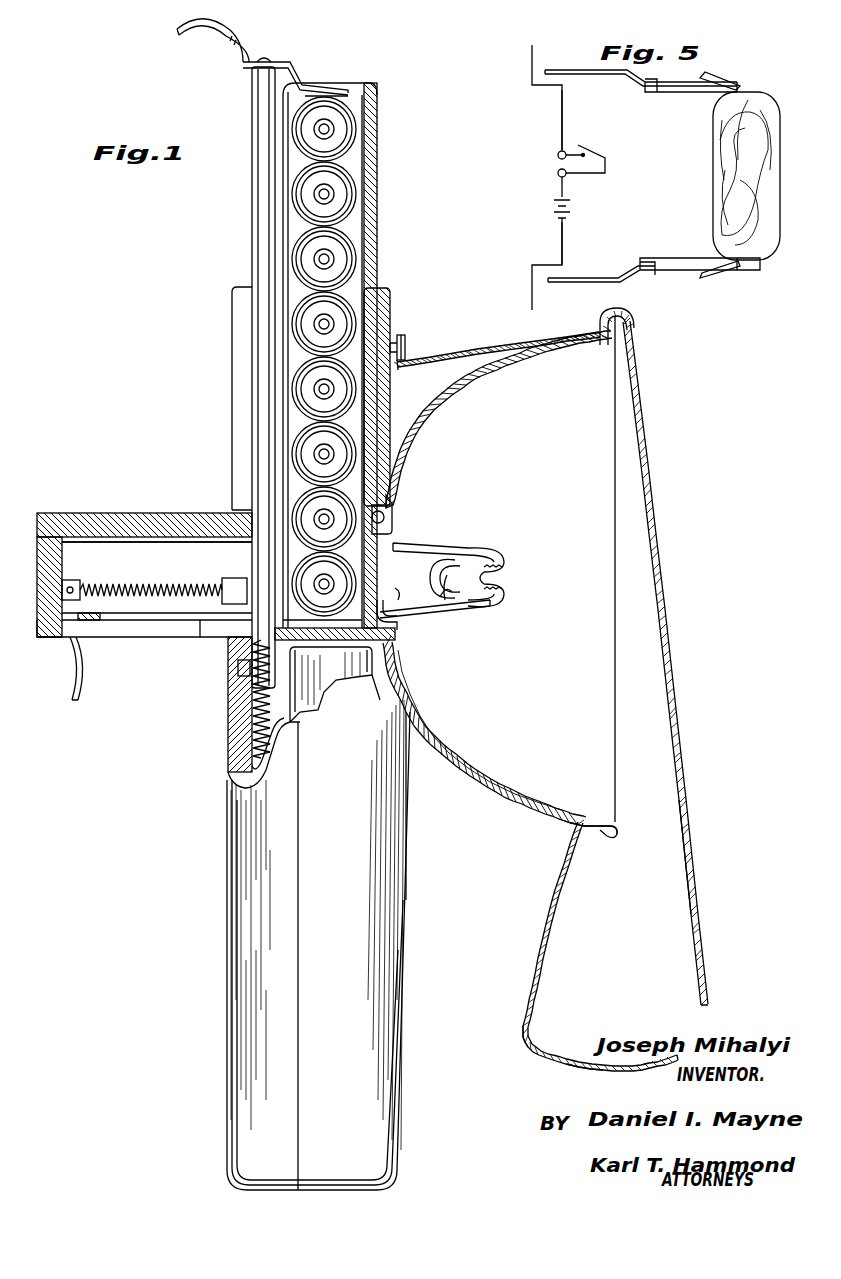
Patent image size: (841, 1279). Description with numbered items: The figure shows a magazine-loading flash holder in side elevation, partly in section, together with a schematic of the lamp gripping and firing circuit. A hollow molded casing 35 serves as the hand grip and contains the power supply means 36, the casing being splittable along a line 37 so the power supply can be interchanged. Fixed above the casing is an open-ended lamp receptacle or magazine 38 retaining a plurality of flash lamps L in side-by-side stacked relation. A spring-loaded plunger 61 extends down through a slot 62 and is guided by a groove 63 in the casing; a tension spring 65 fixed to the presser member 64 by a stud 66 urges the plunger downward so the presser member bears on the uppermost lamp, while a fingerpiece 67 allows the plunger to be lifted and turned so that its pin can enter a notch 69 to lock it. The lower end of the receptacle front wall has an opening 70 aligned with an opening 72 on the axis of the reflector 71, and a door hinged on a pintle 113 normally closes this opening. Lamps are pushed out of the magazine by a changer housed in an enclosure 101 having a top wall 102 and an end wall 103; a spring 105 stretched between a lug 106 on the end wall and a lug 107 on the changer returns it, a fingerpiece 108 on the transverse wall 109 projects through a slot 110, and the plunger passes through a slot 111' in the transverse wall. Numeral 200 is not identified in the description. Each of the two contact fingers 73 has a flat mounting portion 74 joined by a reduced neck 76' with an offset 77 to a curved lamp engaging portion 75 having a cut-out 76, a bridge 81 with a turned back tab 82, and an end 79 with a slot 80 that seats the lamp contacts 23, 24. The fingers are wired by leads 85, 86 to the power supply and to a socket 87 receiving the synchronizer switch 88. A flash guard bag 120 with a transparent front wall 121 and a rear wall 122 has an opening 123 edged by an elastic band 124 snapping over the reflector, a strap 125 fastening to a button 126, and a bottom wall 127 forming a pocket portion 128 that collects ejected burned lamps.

In FIG. 1, the spring-loaded plunger 61 is at (258, 168).
In FIG. 1, the slot 62 is at (237, 372).
In FIG. 1, the presser member 64 is at (305, 86).
In FIG. 1, the stud 66 is at (268, 60).
In FIG. 1, the fingerpiece 67 is at (188, 36).
In FIG. 1, the lamp receptacle or magazine 38 is at (380, 312).
In FIG. 1, the flash lamps L is at (355, 125).
In FIG. 1, the button 126 is at (404, 346).
In FIG. 1, the strap 125 is at (445, 356).
In FIG. 1, the reflector 71 is at (468, 380).
In FIG. 1, the front wall 121 is at (672, 692).
In FIG. 1, the pocket portion 128 is at (663, 955).
In FIG. 1, the rear wall 122 is at (549, 910).
In FIG. 1, the bag 120 is at (524, 1036).
In FIG. 1, the bottom wall 127 is at (586, 1069).
In FIG. 1, the opening 123 is at (580, 823).
In FIG. 1, the elastic band 124 is at (602, 832).
In FIG. 1, the opening 72 is at (395, 525).
In FIG. 1, the pintle 113 is at (392, 500).
In FIG. 1, the lamp engaging portion 75 is at (430, 548).
In FIG. 5, the lamp engaging portion 75 is at (668, 90).
In FIG. 1, the contact fingers 73 is at (465, 550).
In FIG. 1, the end 79 is at (498, 556).
In FIG. 1, the slot 80 is at (496, 578).
In FIG. 1, the bridge 81 is at (470, 600).
In FIG. 1, the turned back tab 82 is at (440, 597).
In FIG. 5, the turned back tab 82 is at (710, 78).
In FIG. 1, the cut-out 76 is at (465, 623).
In FIG. 1, the reduced neck 76' is at (420, 619).
In FIG. 1, the opening 70 is at (395, 640).
In FIG. 1, the top wall 102 is at (98, 513).
In FIG. 1, the enclosure 101 is at (50, 513).
In FIG. 1, the plate 200 is at (140, 546).
In FIG. 1, the spring 105 is at (120, 590).
In FIG. 1, the lug 106 is at (75, 585).
In FIG. 1, the lug 107 is at (242, 582).
In FIG. 1, the slot 111' is at (157, 648).
In FIG. 1, the slot 110 is at (205, 630).
In FIG. 1, the end wall 103 is at (48, 637).
In FIG. 1, the transverse wall 109 is at (88, 622).
In FIG. 1, the fingerpiece 108 is at (78, 700).
In FIG. 1, the groove 63 is at (240, 762).
In FIG. 1, the tension spring 65 is at (258, 712).
In FIG. 1, the notch 69 is at (240, 668).
In FIG. 1, the power supply means 36 is at (333, 683).
In FIG. 5, the power supply means 36 is at (572, 208).
In FIG. 1, the hollow casing 35 is at (260, 1044).
In FIG. 1, the line 37 is at (299, 1046).
In FIG. 5, the lead 85 is at (565, 120).
In FIG. 5, the socket 87 is at (557, 160).
In FIG. 5, the synchronizer switch 88 is at (610, 154).
In FIG. 5, the lead 86 is at (565, 246).
In FIG. 5, the flat mounting portion 74 is at (602, 68).
In FIG. 5, the offset 77 is at (635, 276).
In FIG. 5, the lamp contact 24 is at (740, 90).
In FIG. 5, the lamp contact 23 is at (748, 270).